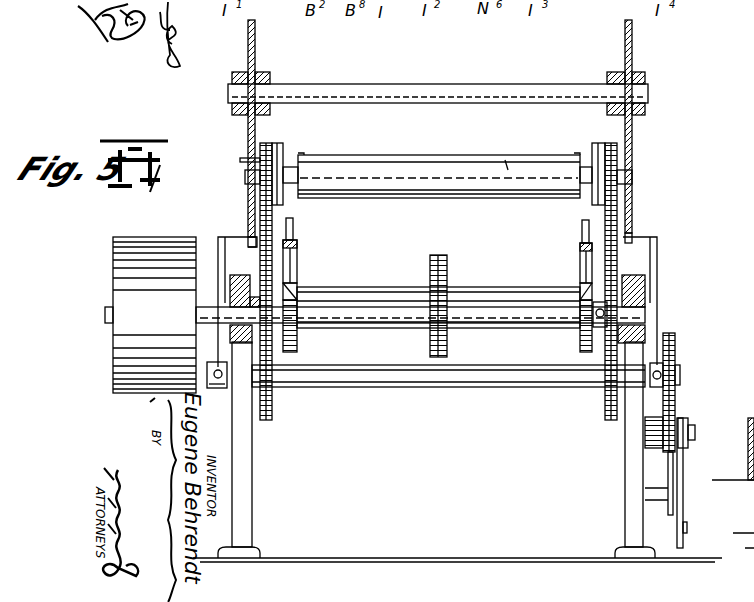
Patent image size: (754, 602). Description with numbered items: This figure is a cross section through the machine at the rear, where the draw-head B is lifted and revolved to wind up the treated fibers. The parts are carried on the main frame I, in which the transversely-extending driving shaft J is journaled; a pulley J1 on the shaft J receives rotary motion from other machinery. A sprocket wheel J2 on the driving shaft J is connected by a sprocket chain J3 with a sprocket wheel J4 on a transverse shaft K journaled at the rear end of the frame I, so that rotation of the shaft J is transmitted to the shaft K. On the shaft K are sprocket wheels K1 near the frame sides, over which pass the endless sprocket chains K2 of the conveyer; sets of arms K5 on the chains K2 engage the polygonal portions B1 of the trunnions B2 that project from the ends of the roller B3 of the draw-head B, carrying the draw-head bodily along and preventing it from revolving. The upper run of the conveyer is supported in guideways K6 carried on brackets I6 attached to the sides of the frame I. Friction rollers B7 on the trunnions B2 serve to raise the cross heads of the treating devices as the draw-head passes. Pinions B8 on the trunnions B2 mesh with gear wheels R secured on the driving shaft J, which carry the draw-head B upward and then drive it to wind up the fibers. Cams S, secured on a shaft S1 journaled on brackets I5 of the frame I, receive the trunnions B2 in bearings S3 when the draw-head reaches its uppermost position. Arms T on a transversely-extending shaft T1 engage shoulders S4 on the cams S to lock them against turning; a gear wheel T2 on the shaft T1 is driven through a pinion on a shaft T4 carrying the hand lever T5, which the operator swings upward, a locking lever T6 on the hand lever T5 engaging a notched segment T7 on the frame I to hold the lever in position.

The main frame I is at (232, 460).
The brackets I5 is at (262, 72).
The brackets I6 is at (297, 283).
The cams S is at (248, 50).
The shaft S1 is at (481, 84).
The bearings S3 is at (648, 186).
The shoulders S4 is at (660, 236).
The draw-head B is at (439, 166).
The polygonal portions B1 is at (290, 167).
The trunnions B2 is at (646, 164).
The roller B3 is at (506, 160).
The friction rollers B7 is at (280, 143).
The pinions B8 is at (646, 138).
The gear wheels R is at (272, 410).
The arms T is at (225, 262).
The shaft T1 is at (518, 387).
The gear wheel T2 is at (675, 340).
The shaft T4 is at (663, 422).
The hand lever T5 is at (695, 432).
The locking lever T6 is at (683, 506).
The notched segment T7 is at (670, 505).
The transverse shaft K is at (502, 294).
The sprocket wheels K1 is at (297, 270).
The sprocket chains K2 is at (290, 246).
The arms K5 is at (293, 226).
The guideways K6 is at (297, 250).
The driving shaft J is at (392, 320).
The pulley J1 is at (115, 290).
The sprocket wheel J2 is at (447, 346).
The sprocket chain J3 is at (440, 360).
The sprocket wheel J4 is at (447, 262).